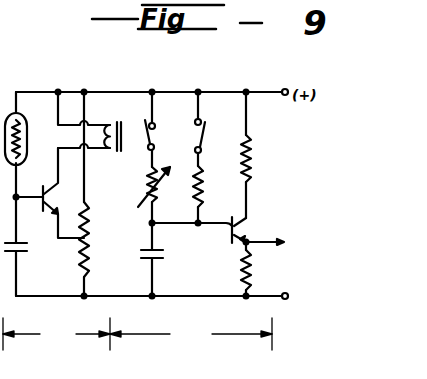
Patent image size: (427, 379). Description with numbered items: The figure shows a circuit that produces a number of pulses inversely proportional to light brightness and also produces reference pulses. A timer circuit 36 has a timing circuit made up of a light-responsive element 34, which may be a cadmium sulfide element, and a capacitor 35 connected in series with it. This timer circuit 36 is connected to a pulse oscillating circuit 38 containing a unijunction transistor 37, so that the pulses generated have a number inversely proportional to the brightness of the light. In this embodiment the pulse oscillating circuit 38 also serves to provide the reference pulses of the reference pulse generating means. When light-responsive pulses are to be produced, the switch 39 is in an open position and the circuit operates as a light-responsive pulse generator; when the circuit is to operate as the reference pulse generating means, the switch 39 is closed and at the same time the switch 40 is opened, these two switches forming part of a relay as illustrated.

The light-responsive element 34 is at (28, 118).
The capacitor 35 is at (22, 251).
The timer circuit 36 is at (56, 338).
The unijunction transistor 37 is at (249, 226).
The pulse oscillating circuit 38 is at (191, 338).
The switch 39 is at (203, 146).
The switch 40 is at (152, 135).